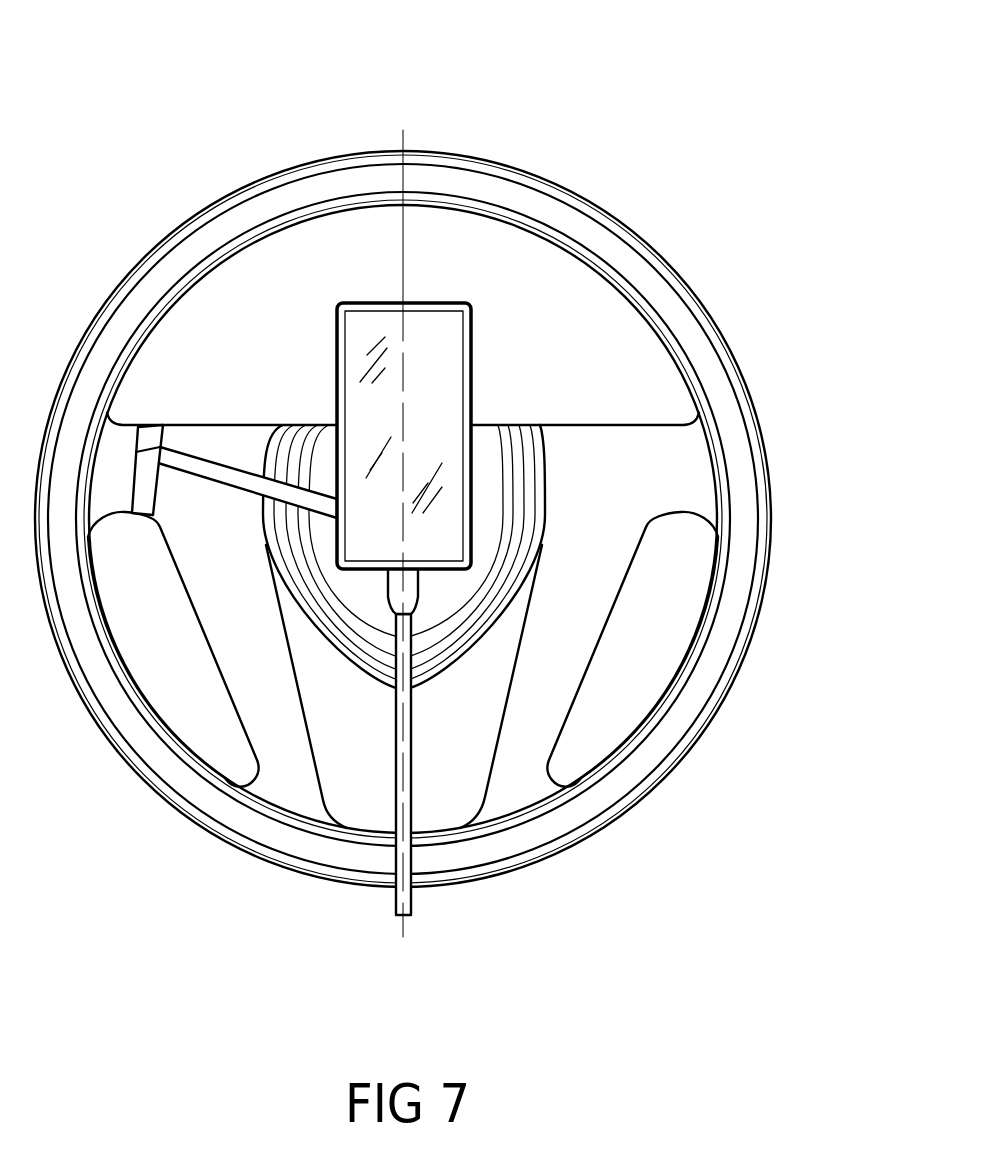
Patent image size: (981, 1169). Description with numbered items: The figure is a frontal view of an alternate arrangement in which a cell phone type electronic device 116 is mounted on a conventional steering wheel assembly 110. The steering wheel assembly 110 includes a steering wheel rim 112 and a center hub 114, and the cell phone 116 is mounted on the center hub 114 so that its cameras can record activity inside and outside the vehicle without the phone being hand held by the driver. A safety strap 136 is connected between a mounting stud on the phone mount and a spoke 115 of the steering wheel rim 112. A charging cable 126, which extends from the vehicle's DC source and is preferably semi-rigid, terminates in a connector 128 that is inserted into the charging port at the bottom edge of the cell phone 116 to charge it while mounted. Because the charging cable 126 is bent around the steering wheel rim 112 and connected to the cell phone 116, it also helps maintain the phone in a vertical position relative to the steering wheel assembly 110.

The steering wheel assembly 110 is at (403, 476).
The steering wheel rim 112 is at (564, 218).
The center hub 114 is at (478, 500).
The spoke 115 is at (268, 447).
The cell phone type electronic device 116 is at (418, 348).
The charging cable 126 is at (403, 730).
The connector 128 is at (418, 604).
The safety strap 136 is at (213, 472).